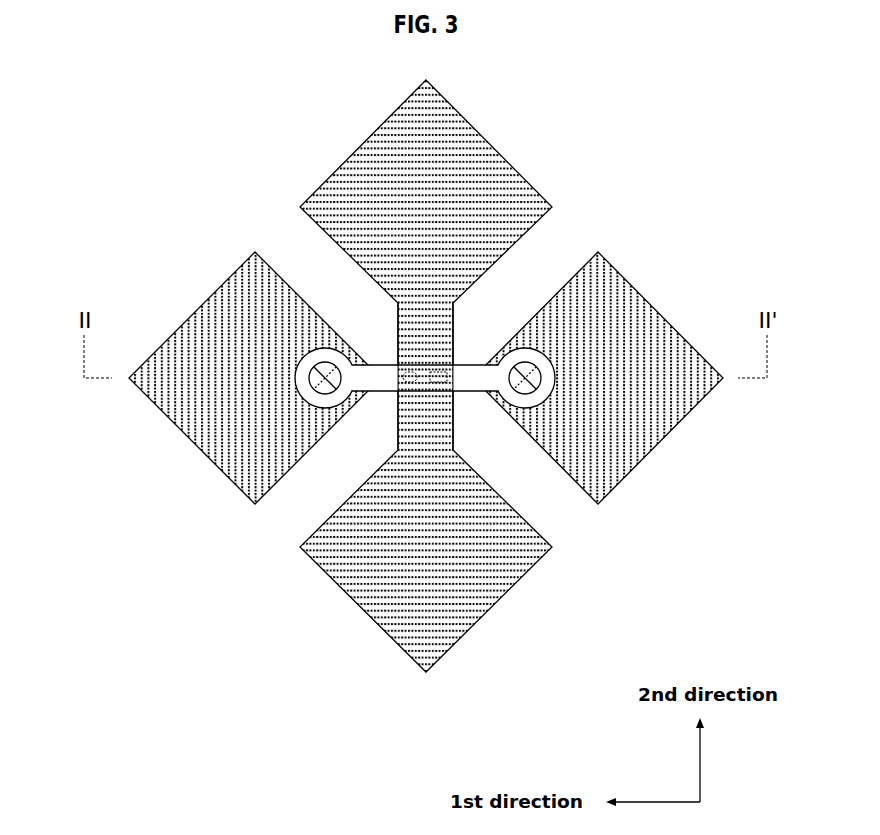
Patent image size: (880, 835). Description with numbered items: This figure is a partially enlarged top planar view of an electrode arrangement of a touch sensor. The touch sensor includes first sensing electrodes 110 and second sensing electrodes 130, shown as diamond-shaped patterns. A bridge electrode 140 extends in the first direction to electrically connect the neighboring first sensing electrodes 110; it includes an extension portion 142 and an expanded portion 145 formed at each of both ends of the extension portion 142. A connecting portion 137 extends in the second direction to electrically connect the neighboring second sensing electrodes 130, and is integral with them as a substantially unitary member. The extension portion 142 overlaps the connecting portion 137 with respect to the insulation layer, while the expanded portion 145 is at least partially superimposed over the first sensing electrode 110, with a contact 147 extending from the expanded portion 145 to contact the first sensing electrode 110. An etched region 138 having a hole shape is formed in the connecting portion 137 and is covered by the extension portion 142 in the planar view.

The first sensing electrode 110 is at (636, 318).
The second sensing electrode 130 is at (495, 164).
The connecting portion 137 is at (399, 420).
The etched region 138 is at (400, 352).
The bridge electrode 140 is at (558, 603).
The extension portion 142 is at (467, 383).
The expanded portion 145 is at (540, 393).
The contact 147 is at (522, 346).